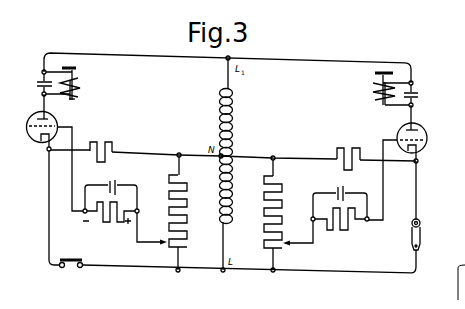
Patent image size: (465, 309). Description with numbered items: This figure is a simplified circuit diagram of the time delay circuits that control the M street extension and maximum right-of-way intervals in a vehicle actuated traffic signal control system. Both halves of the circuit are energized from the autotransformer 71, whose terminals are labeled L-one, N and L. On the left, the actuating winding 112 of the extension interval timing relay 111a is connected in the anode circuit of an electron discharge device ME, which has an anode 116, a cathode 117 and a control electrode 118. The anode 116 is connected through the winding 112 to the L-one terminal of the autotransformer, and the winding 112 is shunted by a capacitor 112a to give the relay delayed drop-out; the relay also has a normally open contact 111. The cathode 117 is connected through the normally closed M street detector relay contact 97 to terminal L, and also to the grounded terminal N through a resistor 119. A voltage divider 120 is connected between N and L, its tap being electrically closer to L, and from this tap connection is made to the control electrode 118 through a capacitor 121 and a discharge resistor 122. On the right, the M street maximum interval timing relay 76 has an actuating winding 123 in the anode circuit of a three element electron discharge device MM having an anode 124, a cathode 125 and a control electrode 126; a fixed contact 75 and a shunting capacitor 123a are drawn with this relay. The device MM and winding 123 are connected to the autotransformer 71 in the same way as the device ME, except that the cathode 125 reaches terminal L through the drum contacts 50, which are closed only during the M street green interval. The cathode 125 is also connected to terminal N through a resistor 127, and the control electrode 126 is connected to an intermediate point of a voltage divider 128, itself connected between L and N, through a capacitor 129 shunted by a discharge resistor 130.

The normally open contact 111 is at (77, 68).
The actuating winding 112 is at (80, 83).
The extension interval timing relay 111a is at (75, 100).
The capacitor 112a is at (38, 85).
The electron discharge device ME is at (57, 118).
The anode 116 is at (32, 112).
The control electrode 118 is at (30, 130).
The cathode 117 is at (37, 143).
The resistor 119 is at (115, 143).
The capacitor 121 is at (112, 182).
The discharge resistor 122 is at (107, 225).
The M street detector relay contact 97 is at (67, 271).
The voltage divider 120 is at (190, 200).
The autotransformer 71 is at (233, 134).
The voltage divider 128 is at (260, 210).
The fixed contact 75 is at (373, 74).
The actuating winding 123 is at (373, 95).
The M street maximum interval timing relay 76 is at (383, 106).
The condenser 123a is at (423, 93).
The electron discharge device MM is at (423, 144).
The anode 124 is at (417, 131).
The control electrode 126 is at (422, 146).
The cathode 125 is at (410, 156).
The resistor 127 is at (353, 148).
The capacitor 129 is at (343, 190).
The discharge resistor 130 is at (343, 227).
The drum contacts 50 is at (421, 232).